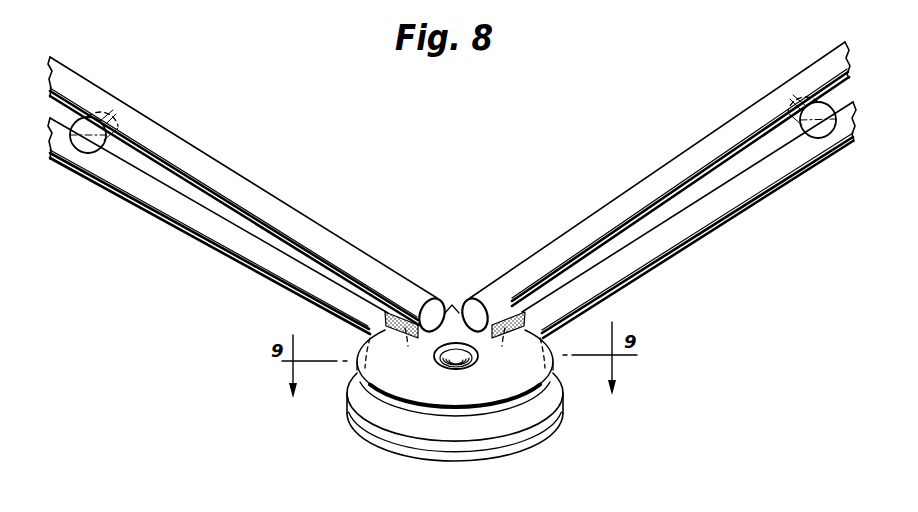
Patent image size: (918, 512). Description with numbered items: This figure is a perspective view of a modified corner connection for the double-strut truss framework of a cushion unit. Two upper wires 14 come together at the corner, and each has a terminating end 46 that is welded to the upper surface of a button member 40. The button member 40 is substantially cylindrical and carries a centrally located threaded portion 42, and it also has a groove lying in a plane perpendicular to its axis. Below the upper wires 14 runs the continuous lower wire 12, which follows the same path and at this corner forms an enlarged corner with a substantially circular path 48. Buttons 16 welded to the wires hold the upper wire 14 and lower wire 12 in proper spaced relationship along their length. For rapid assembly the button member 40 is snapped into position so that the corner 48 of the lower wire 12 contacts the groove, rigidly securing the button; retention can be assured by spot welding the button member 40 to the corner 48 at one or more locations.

The lower wire 12 is at (180, 208).
The upper wire 14 is at (188, 148).
The buttons 16 is at (89, 130).
The button member 40 is at (422, 397).
The threaded portion 42 is at (460, 362).
The terminating ends 46 is at (473, 312).
The circular path 48 is at (483, 428).